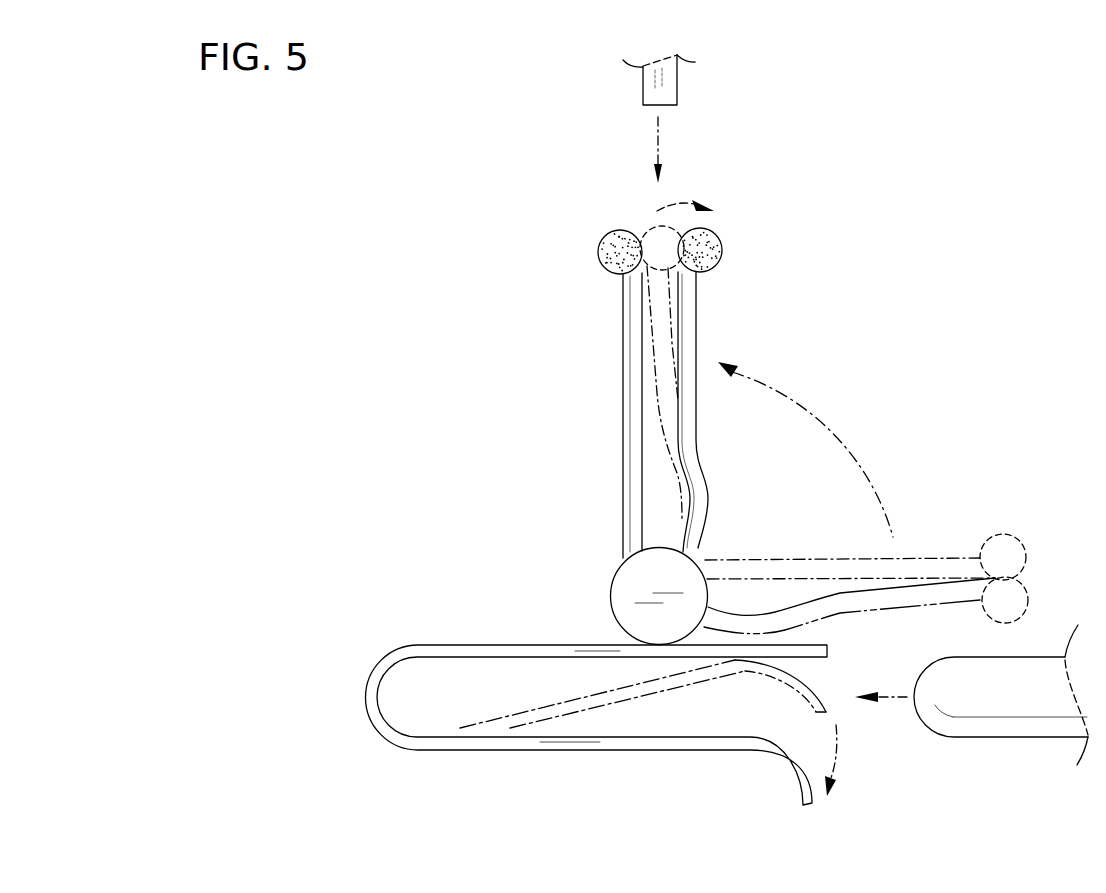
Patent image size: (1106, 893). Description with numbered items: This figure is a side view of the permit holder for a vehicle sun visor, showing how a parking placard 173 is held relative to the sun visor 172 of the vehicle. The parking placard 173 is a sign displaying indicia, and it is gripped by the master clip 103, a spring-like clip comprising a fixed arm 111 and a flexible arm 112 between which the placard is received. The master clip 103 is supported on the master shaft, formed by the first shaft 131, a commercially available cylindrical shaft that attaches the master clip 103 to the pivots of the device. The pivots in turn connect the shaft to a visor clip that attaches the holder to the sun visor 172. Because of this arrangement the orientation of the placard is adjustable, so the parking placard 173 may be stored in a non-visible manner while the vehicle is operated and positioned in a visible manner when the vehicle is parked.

The parking placard 173 is at (677, 86).
The fixed arm 111 is at (627, 398).
The flexible arm 112 is at (696, 328).
The first shaft 131 is at (687, 583).
The master clip 103 is at (618, 743).
The sun visor 172 is at (1003, 720).